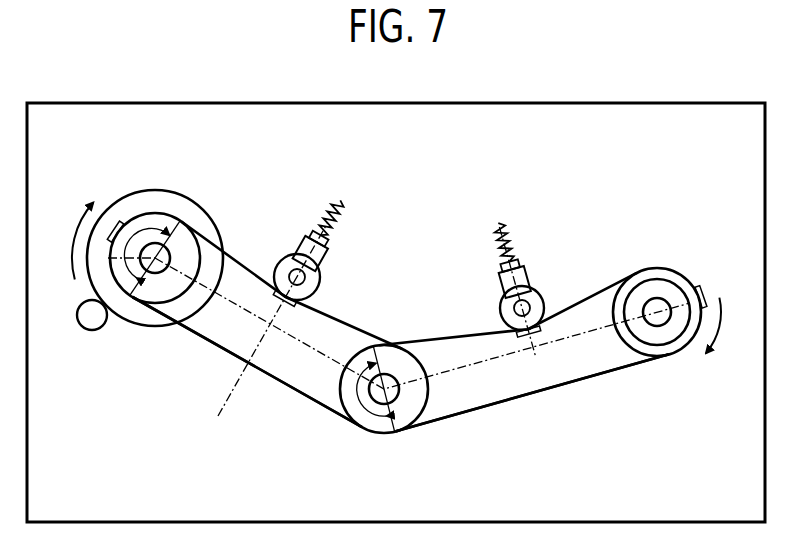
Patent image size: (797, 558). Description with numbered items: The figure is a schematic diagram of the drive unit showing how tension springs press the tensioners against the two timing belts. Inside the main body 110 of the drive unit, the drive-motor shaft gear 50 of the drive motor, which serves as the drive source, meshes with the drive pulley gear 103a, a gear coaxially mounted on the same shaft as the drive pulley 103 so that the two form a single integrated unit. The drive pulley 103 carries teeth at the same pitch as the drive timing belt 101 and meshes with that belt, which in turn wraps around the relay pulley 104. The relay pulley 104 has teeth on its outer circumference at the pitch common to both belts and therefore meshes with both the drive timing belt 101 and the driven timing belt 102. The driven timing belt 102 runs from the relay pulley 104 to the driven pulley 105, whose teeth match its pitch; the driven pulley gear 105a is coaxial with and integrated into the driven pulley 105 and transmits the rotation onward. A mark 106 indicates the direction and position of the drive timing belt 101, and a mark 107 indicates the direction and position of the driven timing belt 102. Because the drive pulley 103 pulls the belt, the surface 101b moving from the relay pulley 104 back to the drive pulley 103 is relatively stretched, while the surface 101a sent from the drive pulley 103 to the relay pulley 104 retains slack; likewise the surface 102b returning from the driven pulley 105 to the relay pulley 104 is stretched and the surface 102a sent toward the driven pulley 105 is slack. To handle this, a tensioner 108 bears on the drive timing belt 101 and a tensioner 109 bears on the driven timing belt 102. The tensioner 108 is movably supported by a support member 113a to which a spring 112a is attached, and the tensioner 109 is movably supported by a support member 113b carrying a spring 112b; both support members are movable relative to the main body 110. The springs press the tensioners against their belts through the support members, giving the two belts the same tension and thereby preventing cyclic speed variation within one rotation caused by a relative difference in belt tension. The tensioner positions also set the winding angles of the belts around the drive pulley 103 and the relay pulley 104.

The main body 110 is at (698, 103).
The mark 106 is at (112, 222).
The drive pulley 103 is at (160, 217).
The drive pulley gear 103a is at (183, 199).
The drive timing belt 101 is at (291, 386).
The surface of the drive timing belt 101a is at (266, 272).
The surface of the drive timing belt 101b is at (206, 346).
The tensioner 108 is at (318, 290).
The support member 113a is at (327, 262).
The spring 112a is at (340, 218).
The relay pulley 104 is at (389, 432).
The driven timing belt 102 is at (588, 376).
The surface of the driven timing belt 102a is at (462, 330).
The surface of the driven timing belt 102b is at (486, 410).
The tensioner 109 is at (544, 302).
The support member 113b is at (530, 272).
The spring 112b is at (500, 238).
The driven pulley 105 is at (636, 280).
The driven pulley gear 105a is at (666, 270).
The mark 107 is at (704, 294).
The drive-motor shaft gear 50 is at (96, 330).